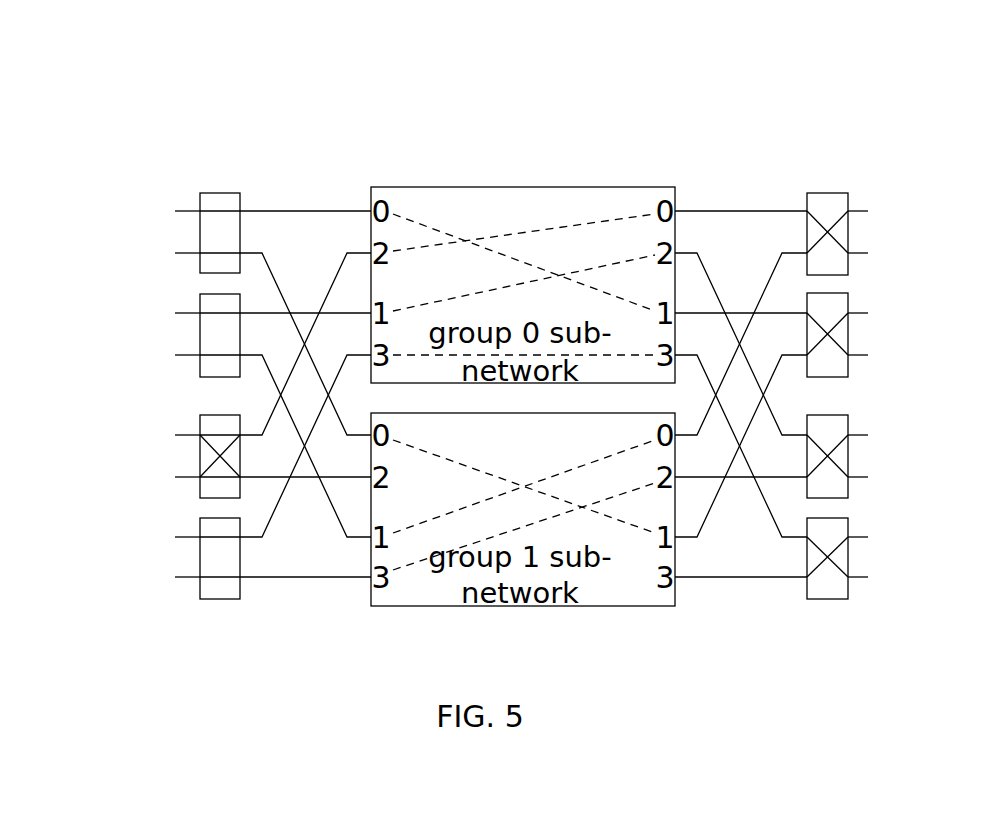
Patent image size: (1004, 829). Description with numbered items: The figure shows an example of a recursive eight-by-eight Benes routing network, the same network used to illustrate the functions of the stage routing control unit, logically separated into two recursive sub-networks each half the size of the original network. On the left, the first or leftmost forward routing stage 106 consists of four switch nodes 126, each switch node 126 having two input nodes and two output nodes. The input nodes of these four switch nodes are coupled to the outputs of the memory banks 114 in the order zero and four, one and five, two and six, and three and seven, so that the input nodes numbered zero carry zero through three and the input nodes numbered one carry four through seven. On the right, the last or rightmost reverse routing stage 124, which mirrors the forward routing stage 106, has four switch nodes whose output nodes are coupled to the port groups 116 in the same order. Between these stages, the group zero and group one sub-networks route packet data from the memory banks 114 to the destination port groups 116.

The forward routing stage 106 is at (240, 190).
The memory banks 114 is at (108, 394).
The port groups 116 is at (910, 394).
The reverse routing stage 124 is at (803, 170).
The switch node 126 is at (198, 205).